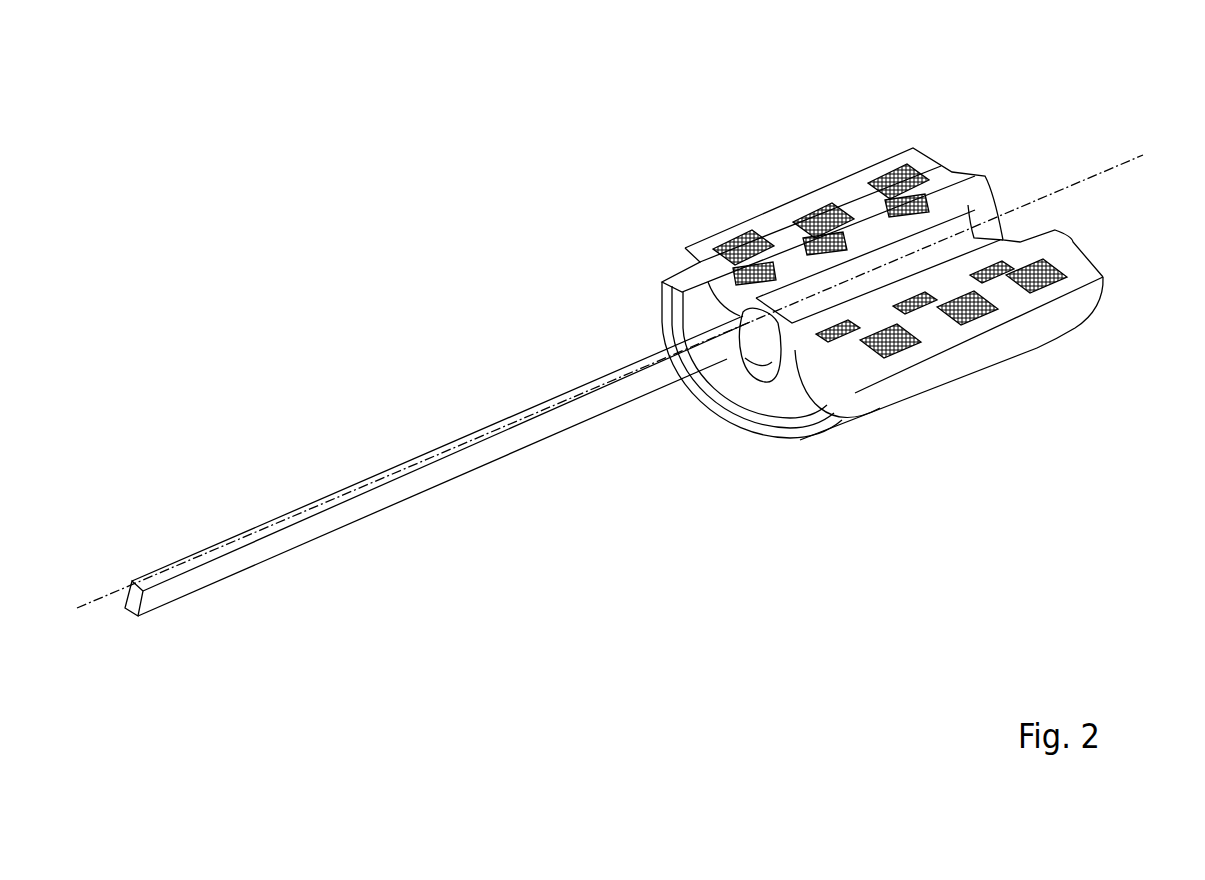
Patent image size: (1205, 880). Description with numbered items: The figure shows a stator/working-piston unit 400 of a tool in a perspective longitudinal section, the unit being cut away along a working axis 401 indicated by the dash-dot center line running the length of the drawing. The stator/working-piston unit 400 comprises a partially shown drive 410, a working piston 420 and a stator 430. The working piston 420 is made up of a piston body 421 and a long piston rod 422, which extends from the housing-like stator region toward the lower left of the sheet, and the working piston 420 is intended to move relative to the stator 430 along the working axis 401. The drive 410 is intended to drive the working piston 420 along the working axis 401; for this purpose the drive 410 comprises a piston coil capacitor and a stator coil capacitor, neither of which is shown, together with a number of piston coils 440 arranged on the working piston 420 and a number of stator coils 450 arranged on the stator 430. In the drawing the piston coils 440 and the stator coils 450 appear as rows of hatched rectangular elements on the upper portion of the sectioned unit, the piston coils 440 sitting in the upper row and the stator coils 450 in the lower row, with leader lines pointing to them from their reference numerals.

The stator/working-piston unit 400 is at (626, 368).
The working axis 401 is at (1139, 148).
The drive 410 is at (919, 357).
The working piston 420 is at (466, 510).
The piston body 421 is at (808, 330).
The piston rod 422 is at (602, 412).
The stator 430 is at (773, 228).
The piston coils 440 is at (832, 240).
The stator coils 450 is at (903, 350).